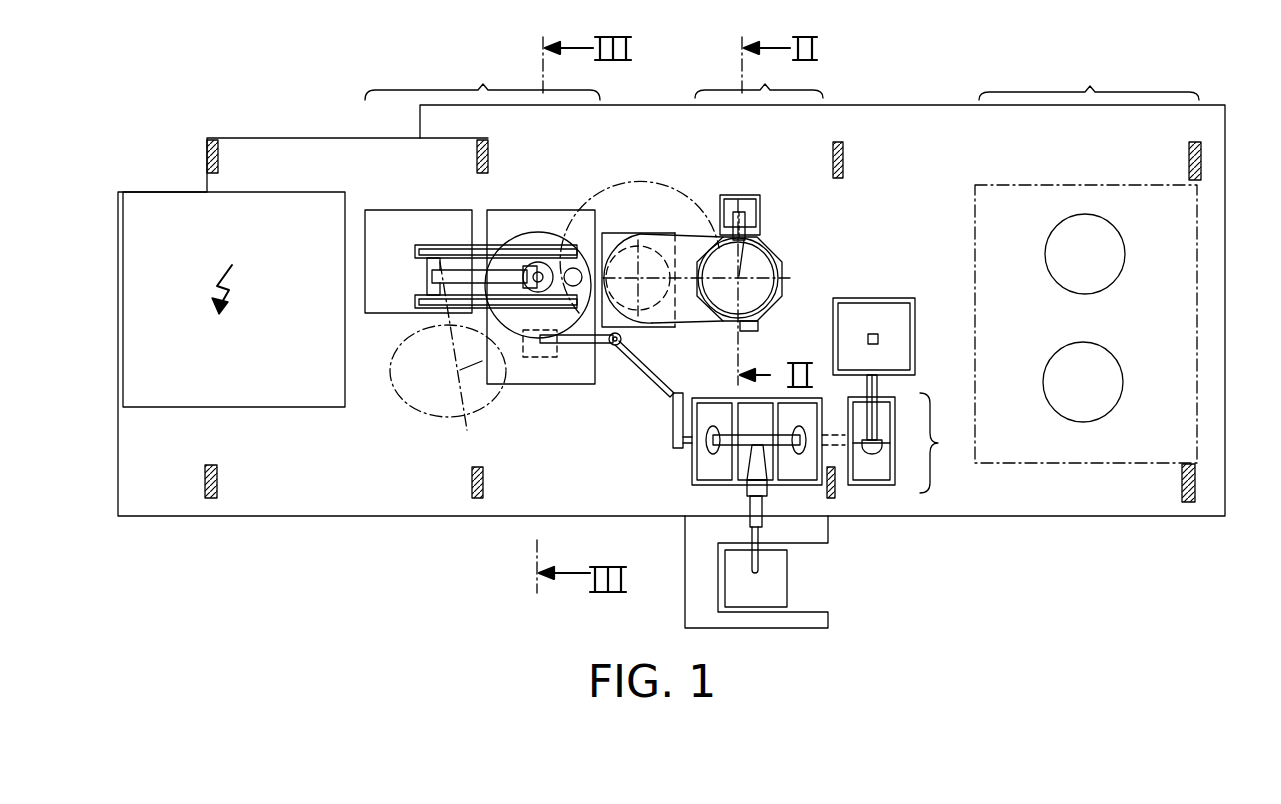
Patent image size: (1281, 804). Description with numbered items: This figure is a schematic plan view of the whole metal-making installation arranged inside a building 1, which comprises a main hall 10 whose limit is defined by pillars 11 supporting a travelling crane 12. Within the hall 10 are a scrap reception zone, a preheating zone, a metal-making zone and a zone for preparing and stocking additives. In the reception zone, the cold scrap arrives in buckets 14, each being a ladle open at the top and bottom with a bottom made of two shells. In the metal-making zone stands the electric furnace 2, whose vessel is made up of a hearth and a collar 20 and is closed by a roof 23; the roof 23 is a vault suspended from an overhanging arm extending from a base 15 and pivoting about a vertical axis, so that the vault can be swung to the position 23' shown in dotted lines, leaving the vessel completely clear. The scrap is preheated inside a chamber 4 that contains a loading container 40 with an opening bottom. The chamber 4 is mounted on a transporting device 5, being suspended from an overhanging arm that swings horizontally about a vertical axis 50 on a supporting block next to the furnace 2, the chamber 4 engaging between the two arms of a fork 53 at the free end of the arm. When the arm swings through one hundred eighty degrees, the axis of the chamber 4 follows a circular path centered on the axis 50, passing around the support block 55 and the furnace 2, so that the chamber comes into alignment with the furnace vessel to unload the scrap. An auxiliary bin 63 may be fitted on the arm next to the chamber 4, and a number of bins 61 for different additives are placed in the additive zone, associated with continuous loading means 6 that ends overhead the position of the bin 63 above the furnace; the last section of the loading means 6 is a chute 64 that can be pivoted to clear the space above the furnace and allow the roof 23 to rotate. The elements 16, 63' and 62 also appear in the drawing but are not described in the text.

The building 1 is at (254, 124).
The main hall 10 is at (353, 170).
The pillars 11 is at (490, 150).
The power supply / control unit 16 is at (158, 203).
The base 15 is at (460, 273).
The electric furnace 2 is at (528, 202).
The collar 20 is at (540, 275).
The roof 23 is at (624, 219).
The position of the roof vault 23' is at (446, 369).
The clamp (alternate position) 63' is at (529, 376).
The continuous loading means 6 is at (578, 342).
The chute 64 is at (645, 372).
The support block 55 is at (637, 233).
The vertical axis 50 is at (650, 308).
The transporting device 5 is at (696, 218).
The fork 53 is at (718, 233).
The auxiliary bin 63 is at (765, 204).
The loading container 40 is at (765, 260).
The preheating chamber 4 is at (777, 302).
The drive box 62 is at (833, 333).
The bins 61 is at (692, 467).
The travelling crane 12 is at (1197, 253).
The bucket 14 is at (1123, 276).